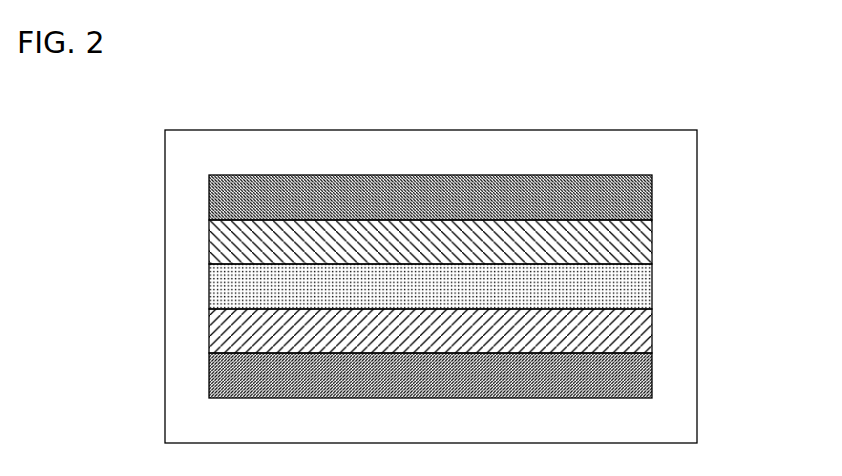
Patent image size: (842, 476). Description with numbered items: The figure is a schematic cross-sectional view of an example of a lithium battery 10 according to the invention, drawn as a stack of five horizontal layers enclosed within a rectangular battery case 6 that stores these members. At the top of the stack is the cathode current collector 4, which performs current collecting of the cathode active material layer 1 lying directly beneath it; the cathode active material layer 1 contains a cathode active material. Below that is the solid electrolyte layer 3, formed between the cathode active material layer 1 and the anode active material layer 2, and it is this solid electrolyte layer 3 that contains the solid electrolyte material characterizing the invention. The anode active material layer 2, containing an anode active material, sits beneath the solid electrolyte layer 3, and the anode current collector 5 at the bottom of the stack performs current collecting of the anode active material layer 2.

The lithium battery 10 is at (682, 85).
The battery case 6 is at (672, 148).
The cathode current collector 4 is at (638, 191).
The cathode active material layer 1 is at (638, 236).
The solid electrolyte layer 3 is at (638, 281).
The anode active material layer 2 is at (638, 324).
The anode current collector 5 is at (638, 369).